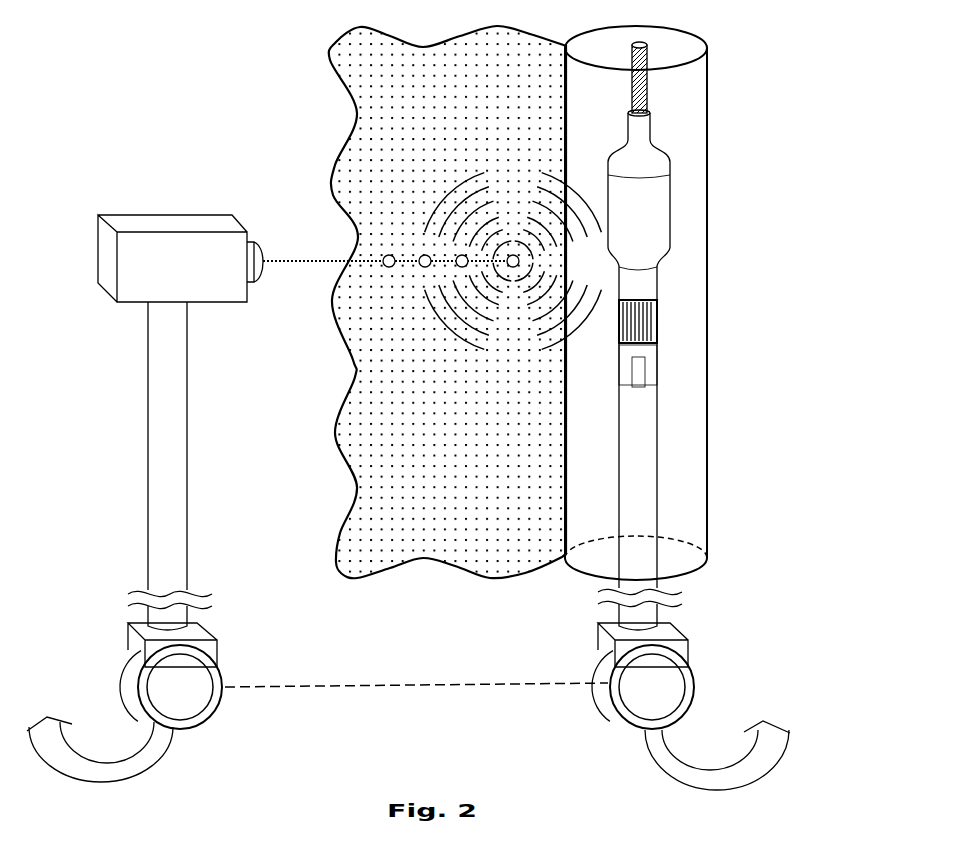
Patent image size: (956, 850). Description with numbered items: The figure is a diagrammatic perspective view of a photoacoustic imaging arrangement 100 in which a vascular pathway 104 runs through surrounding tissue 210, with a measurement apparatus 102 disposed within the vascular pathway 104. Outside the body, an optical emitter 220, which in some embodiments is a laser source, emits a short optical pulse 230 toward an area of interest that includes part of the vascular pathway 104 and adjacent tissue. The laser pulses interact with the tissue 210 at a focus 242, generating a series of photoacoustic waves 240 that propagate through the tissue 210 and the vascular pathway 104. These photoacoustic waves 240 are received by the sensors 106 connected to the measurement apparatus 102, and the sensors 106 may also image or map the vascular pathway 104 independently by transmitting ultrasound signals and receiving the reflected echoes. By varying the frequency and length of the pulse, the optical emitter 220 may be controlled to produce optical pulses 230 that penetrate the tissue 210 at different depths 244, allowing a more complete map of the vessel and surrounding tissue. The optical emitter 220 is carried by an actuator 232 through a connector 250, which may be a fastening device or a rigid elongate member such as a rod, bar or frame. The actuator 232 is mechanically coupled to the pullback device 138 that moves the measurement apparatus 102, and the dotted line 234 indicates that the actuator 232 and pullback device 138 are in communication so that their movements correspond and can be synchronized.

The inspection system 100 is at (830, 420).
The measurement apparatus 102 is at (691, 336).
The vascular pathway 104 is at (708, 100).
The sensors 106 is at (658, 315).
The pullback device 138 is at (696, 682).
The tissue 210 is at (333, 41).
The optical emitter 220 is at (138, 222).
The optical pulse 230 is at (340, 260).
The actuator 232 is at (120, 672).
The dotted line 234 is at (415, 684).
The photoacoustic waves 240 is at (450, 177).
The focus 242 is at (513, 268).
The depths 244 is at (456, 257).
The connector 250 is at (145, 449).